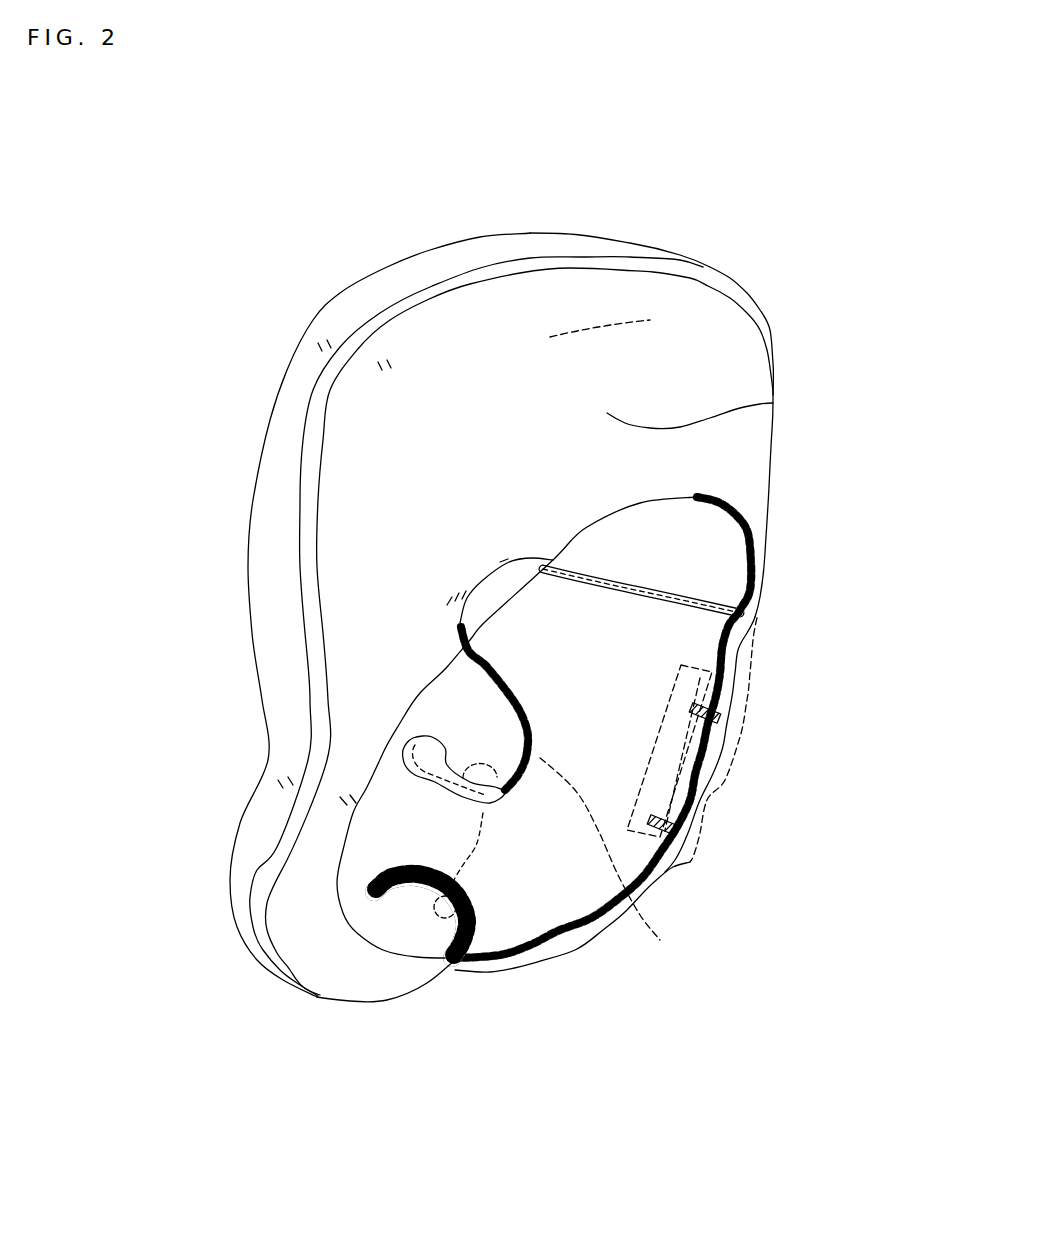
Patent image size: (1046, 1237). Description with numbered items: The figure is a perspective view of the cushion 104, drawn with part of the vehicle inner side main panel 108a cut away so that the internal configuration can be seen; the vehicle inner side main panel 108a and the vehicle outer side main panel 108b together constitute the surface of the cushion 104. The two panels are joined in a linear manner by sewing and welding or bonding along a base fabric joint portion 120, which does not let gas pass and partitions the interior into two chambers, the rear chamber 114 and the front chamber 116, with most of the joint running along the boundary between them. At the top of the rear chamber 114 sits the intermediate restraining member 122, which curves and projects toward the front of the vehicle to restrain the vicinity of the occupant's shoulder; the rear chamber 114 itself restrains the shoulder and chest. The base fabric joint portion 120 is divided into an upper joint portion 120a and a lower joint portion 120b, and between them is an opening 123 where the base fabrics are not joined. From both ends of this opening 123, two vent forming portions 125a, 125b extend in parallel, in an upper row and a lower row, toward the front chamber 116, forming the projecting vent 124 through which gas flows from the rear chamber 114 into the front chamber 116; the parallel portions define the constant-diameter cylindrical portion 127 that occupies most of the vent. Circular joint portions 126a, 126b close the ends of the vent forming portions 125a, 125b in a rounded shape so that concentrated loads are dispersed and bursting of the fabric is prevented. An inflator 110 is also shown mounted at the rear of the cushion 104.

The cushion 104 is at (305, 248).
The vehicle inner side main panel 108a is at (747, 360).
The vehicle outer side main panel 108b is at (637, 247).
The inflator 110 is at (705, 695).
The rear chamber 114 is at (683, 640).
The front chamber 116 is at (773, 403).
The base fabric joint portion 120 is at (617, 750).
The upper joint portion 120a is at (600, 877).
The lower joint portion 120b is at (547, 953).
The intermediate restraining member 122 is at (484, 600).
The opening 123 is at (478, 846).
The projecting vent 124 is at (407, 833).
The vent forming portion 125a is at (503, 803).
The vent forming portion 125b is at (457, 907).
The circular joint portion 126a is at (440, 740).
The circular joint portion 126b is at (400, 890).
The cylindrical portion 127 is at (338, 890).